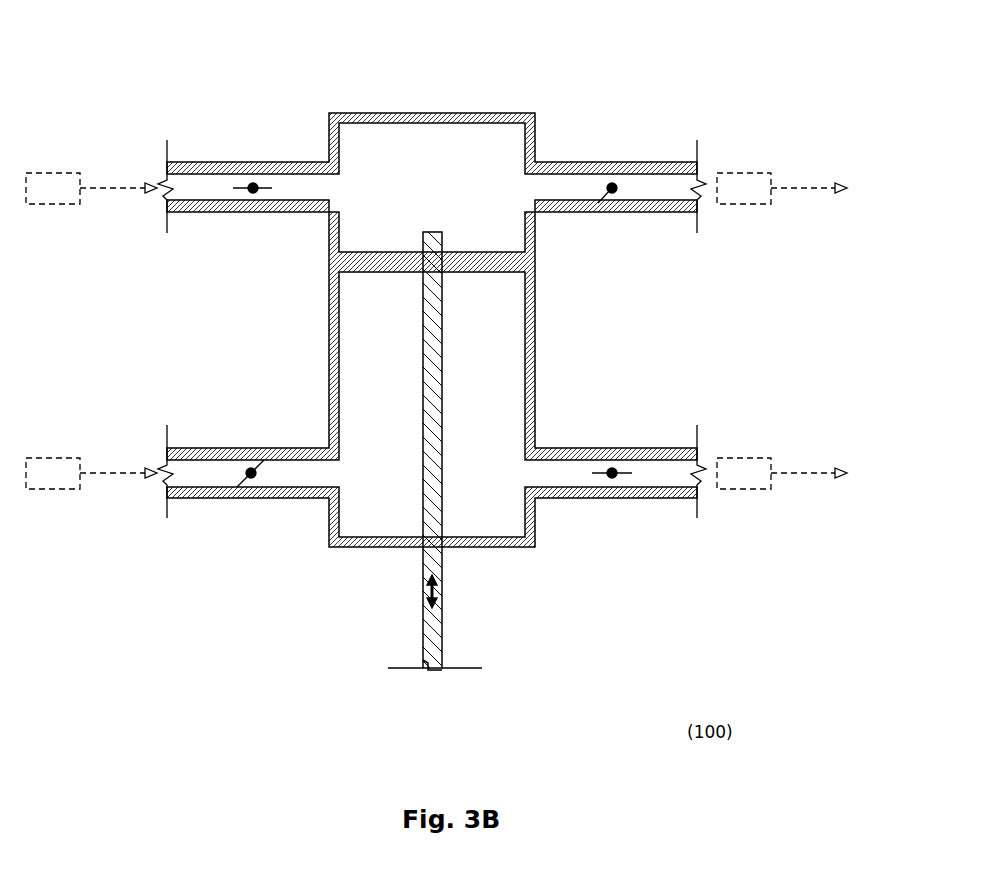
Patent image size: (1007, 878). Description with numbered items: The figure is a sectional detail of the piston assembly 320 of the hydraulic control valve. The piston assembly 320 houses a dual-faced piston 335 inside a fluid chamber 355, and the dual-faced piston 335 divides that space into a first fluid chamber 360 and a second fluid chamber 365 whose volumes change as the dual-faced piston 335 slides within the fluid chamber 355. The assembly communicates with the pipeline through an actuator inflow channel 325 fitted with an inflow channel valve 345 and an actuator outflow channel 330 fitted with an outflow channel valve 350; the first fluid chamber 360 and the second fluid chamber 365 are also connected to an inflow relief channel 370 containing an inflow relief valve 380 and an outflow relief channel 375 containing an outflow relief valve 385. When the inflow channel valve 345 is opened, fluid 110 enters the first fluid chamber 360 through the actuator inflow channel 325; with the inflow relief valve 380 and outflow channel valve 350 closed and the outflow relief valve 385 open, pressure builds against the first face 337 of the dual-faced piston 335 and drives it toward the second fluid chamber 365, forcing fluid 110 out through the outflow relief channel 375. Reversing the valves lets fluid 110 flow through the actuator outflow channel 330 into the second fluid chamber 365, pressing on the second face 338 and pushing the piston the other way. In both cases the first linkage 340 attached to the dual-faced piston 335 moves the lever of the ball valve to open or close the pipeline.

The fluid 110 is at (436, 331).
The piston assembly 320 is at (432, 363).
The actuator inflow channel 325 is at (202, 187).
The actuator outflow channel 330 is at (202, 470).
The dual-faced piston 335 is at (485, 262).
The first face 337 is at (465, 252).
The second face 338 is at (482, 272).
The linkage-1 340 is at (442, 593).
The inflow channel valve 345 is at (251, 185).
The outflow channel valve 350 is at (249, 470).
The fluid chamber 355 is at (420, 116).
The first fluid chamber 360 is at (390, 177).
The second fluid chamber 365 is at (382, 513).
The inflow relief channel 370 is at (653, 190).
The outflow relief channel 375 is at (662, 470).
The inflow relief valve 380 is at (612, 188).
The outflow relief valve 385 is at (613, 470).